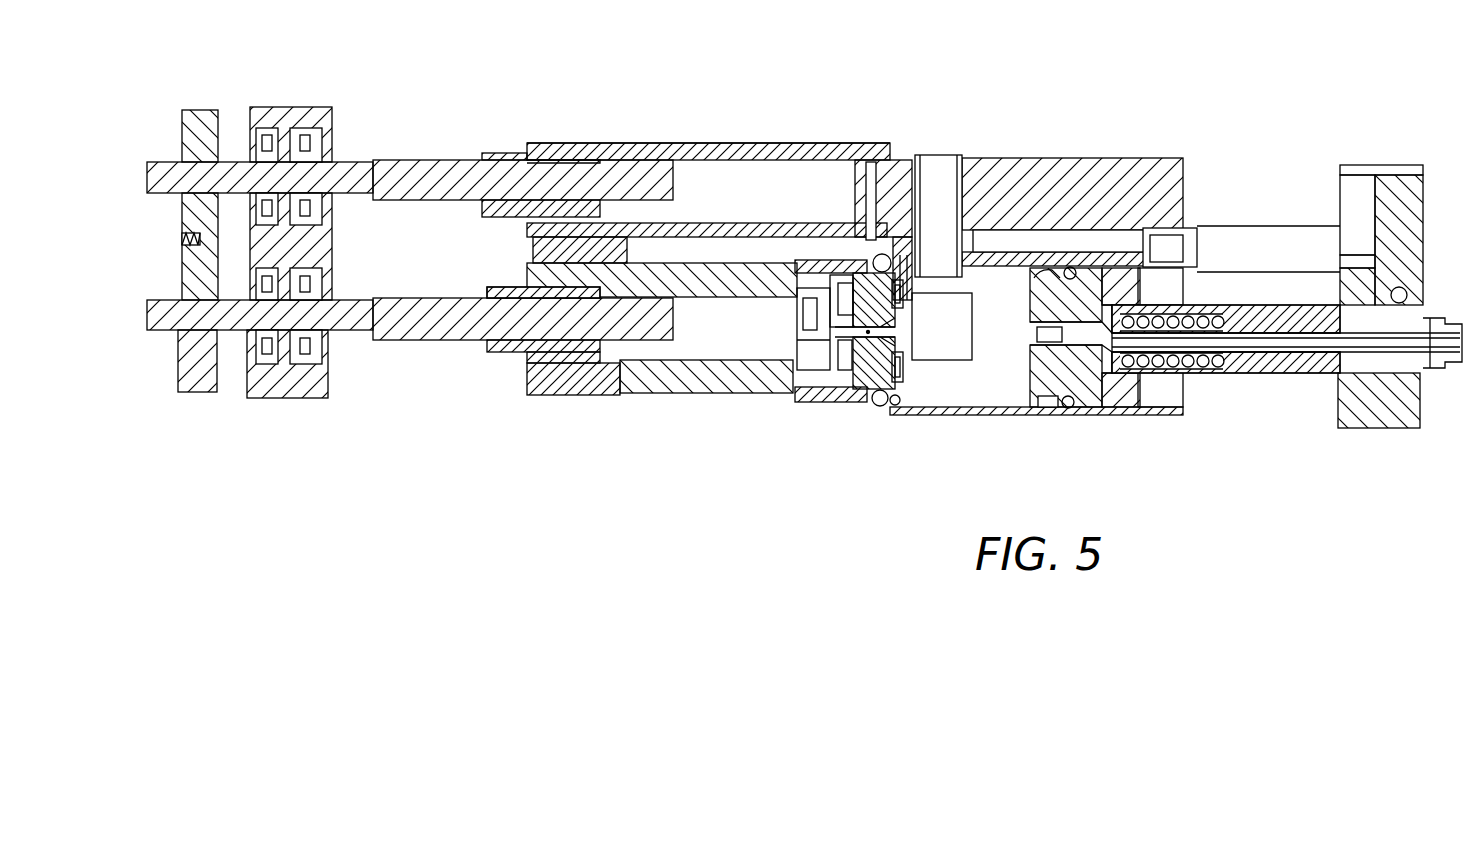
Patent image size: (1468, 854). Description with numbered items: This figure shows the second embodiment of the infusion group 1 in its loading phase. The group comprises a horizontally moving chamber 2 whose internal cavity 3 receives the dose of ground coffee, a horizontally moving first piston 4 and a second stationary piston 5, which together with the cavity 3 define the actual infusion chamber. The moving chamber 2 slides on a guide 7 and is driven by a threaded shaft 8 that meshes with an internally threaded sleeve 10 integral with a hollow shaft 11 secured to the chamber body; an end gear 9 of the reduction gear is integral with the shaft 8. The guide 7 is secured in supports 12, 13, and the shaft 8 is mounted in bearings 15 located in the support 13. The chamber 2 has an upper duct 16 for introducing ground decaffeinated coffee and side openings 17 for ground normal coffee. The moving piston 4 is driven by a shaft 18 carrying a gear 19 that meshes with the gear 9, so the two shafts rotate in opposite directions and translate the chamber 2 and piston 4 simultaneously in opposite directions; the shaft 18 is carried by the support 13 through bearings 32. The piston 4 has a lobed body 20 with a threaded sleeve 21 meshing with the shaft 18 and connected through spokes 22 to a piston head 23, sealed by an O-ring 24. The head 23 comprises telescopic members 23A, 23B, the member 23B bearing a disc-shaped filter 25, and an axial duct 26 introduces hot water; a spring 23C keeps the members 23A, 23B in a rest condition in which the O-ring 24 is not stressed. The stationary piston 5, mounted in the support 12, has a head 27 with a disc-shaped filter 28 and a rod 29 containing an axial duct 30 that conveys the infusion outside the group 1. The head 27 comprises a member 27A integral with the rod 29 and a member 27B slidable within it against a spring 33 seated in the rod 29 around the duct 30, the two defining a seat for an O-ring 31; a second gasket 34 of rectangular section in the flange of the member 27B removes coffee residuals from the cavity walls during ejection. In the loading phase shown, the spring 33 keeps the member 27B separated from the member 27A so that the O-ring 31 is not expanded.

The infusion group 1 is at (622, 128).
The moving chamber 2 is at (1088, 175).
The internal cavity 3 is at (1000, 385).
The first piston 4 is at (678, 397).
The second stationary piston 5 is at (1228, 385).
The guide 7 is at (1258, 236).
The threaded shaft 8 is at (418, 180).
The end gear 9 is at (199, 124).
The internally threaded sleeve 10 is at (501, 158).
The hollow shaft 11 is at (708, 148).
The support 12 is at (1395, 188).
The support 13 is at (338, 250).
The bearings 15 is at (308, 135).
The upper duct 16 is at (935, 173).
The side opening 17 is at (952, 345).
The shaft 18 is at (418, 340).
The gear 19 is at (198, 373).
The body 20 is at (585, 390).
The threaded sleeve 21 is at (499, 350).
The spokes 22 is at (753, 393).
The piston head 23 is at (838, 392).
The member 23A is at (810, 388).
The member 23B is at (905, 373).
The spring 23C is at (807, 372).
The O-ring 24 is at (878, 406).
The disc-shaped filter 25 is at (899, 405).
The axial duct 26 is at (868, 333).
The head 27 is at (1107, 395).
The member 27A is at (1125, 397).
The member 27B is at (1040, 395).
The disc-shaped filter 28 is at (1035, 283).
The rod 29 is at (1268, 370).
The axial duct 30 is at (1322, 342).
The O-ring 31 is at (1068, 408).
The bearings 32 is at (303, 370).
The spring 33 is at (1160, 372).
The second gasket 34 is at (1050, 400).